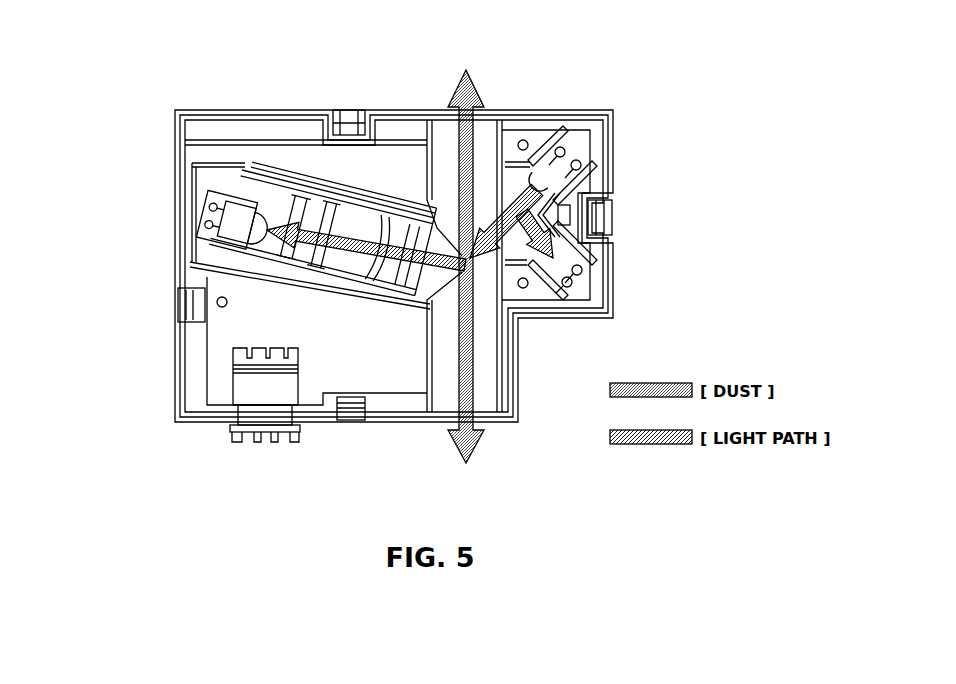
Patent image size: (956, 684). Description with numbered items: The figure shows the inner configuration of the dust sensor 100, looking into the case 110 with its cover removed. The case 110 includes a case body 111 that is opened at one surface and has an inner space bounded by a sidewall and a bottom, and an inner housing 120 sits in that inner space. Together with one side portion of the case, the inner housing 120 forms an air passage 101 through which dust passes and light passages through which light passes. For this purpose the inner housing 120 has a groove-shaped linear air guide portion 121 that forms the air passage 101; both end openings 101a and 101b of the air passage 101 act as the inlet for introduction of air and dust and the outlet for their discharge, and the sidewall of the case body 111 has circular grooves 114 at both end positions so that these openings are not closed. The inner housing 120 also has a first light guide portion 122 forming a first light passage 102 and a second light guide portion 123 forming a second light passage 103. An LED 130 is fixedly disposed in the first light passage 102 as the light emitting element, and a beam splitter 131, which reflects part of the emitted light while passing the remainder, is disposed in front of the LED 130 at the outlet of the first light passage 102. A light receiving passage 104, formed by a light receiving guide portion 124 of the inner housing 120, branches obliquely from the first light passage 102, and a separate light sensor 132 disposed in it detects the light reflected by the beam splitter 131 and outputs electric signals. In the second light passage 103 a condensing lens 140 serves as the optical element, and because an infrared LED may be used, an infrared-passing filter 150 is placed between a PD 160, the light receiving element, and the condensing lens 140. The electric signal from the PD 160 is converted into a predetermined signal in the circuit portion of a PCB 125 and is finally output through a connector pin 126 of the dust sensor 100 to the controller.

The dust sensor 100 is at (630, 167).
The air passage 101 is at (505, 130).
The end opening (inlet) 101a is at (488, 415).
The end opening (outlet) 101b is at (487, 155).
The first light passage 102 is at (570, 208).
The second light passage 103 is at (345, 110).
The light receiving passage 104 is at (538, 252).
The case 110 is at (394, 266).
The case body 111 is at (178, 381).
The circular grooves 114 is at (446, 413).
The inner housing 120 is at (215, 157).
The air guide portion 121 is at (443, 135).
The first light guide portion 122 is at (602, 192).
The second light guide portion 123 is at (348, 293).
The light receiving guide portion 124 is at (580, 221).
The PCB 125 is at (245, 327).
The connector pin 126 is at (257, 413).
The LED 130 is at (548, 133).
The beam splitter 131 is at (527, 262).
The light sensor 132 is at (550, 245).
The condensing lens 140 is at (395, 217).
The infrared-passing filter 150 is at (327, 207).
The PD 160 is at (260, 193).